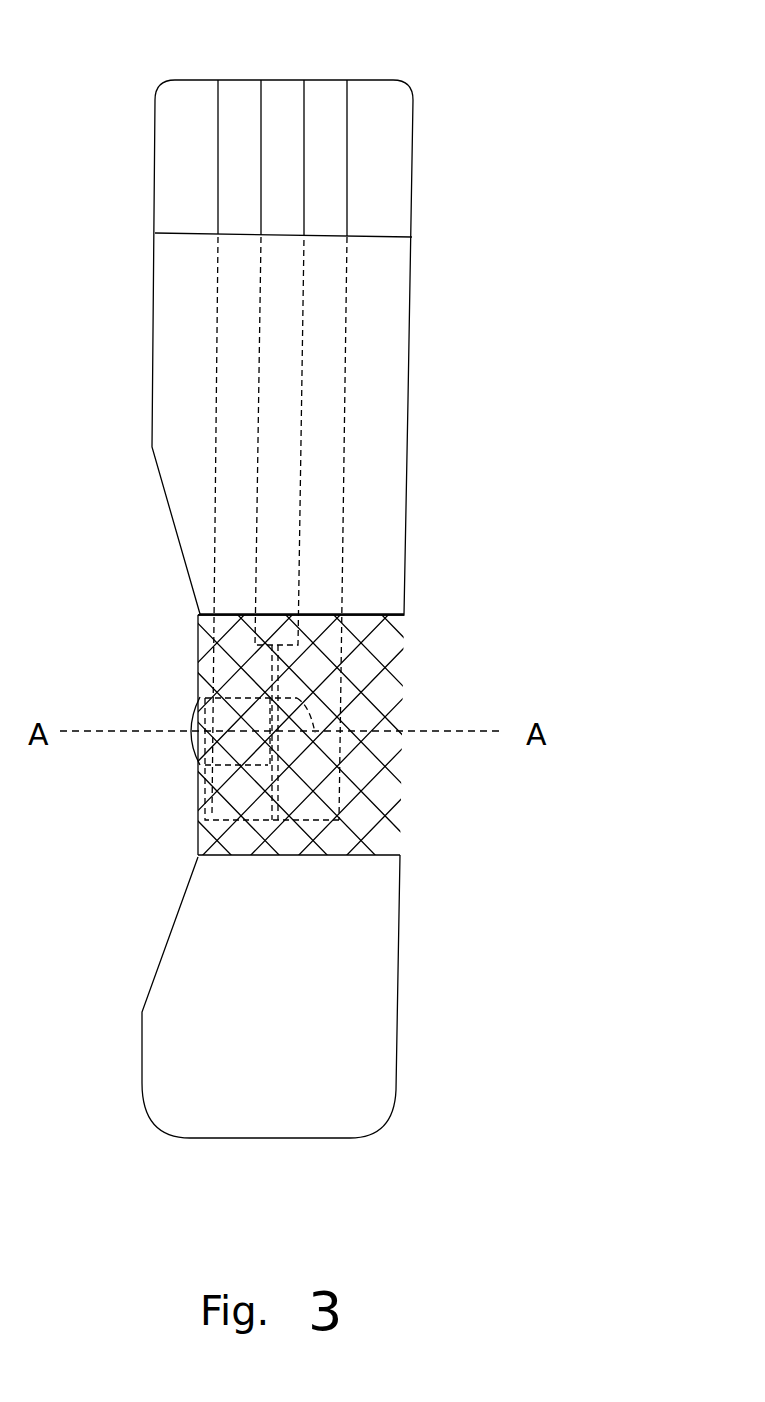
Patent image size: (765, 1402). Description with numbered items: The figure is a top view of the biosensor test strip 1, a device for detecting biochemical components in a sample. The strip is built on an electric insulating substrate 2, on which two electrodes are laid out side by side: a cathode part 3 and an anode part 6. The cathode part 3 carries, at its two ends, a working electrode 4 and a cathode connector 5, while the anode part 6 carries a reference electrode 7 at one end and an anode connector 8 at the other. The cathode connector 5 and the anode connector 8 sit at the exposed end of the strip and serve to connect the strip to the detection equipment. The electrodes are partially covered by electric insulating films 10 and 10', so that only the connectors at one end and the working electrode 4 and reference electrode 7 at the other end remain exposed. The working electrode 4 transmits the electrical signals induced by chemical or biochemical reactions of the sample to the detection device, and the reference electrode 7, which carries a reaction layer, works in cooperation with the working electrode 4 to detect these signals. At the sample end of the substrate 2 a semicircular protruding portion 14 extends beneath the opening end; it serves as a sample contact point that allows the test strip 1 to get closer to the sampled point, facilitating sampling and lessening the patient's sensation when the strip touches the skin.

The biosensor test strip 1 is at (519, 215).
The electric insulating substrate 2 is at (340, 1021).
The cathode part 3 is at (214, 380).
The working electrode 4 is at (241, 733).
The cathode connector 5 is at (238, 126).
The anode part 6 is at (345, 365).
The reference electrode 7 is at (290, 737).
The anode connector 8 is at (327, 133).
The electric insulating film 10 is at (309, 735).
The electric insulating film 10' is at (354, 567).
The protruding portion 14 is at (198, 720).